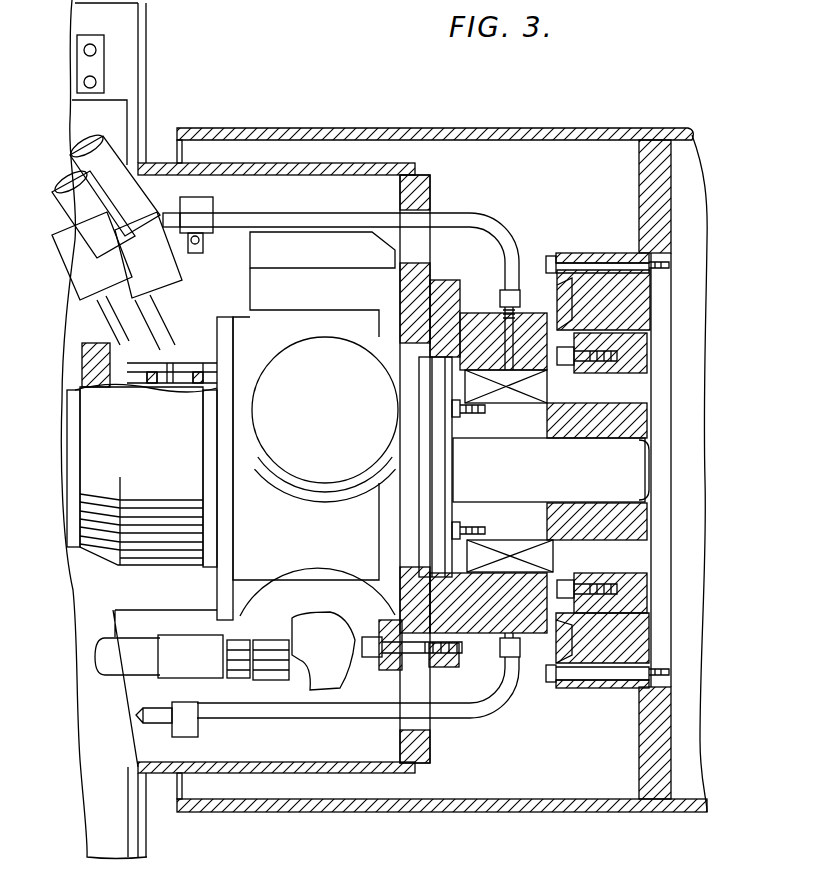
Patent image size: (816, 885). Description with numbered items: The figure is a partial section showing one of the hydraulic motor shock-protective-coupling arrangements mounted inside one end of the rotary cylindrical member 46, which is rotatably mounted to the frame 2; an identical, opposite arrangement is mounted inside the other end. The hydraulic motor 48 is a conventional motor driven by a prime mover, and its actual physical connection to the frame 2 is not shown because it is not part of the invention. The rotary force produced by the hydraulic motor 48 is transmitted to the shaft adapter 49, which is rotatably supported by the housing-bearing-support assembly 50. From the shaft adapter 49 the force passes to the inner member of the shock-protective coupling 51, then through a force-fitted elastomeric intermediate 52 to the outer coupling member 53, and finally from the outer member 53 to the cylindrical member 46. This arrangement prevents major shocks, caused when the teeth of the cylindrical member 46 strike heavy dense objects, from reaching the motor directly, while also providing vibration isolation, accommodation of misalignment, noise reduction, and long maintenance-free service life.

The frame 2 is at (335, 163).
The cylindrical member 46 is at (479, 127).
The hydraulic motor 48 is at (160, 567).
The shaft adapter 49 is at (644, 423).
The housing-bearing-support assembly 50 is at (533, 317).
The inner member of shock-protective-coupling 51 is at (651, 594).
The elastomeric intermediate 52 is at (644, 325).
The outer member of shock-protective-coupling 53 is at (593, 253).